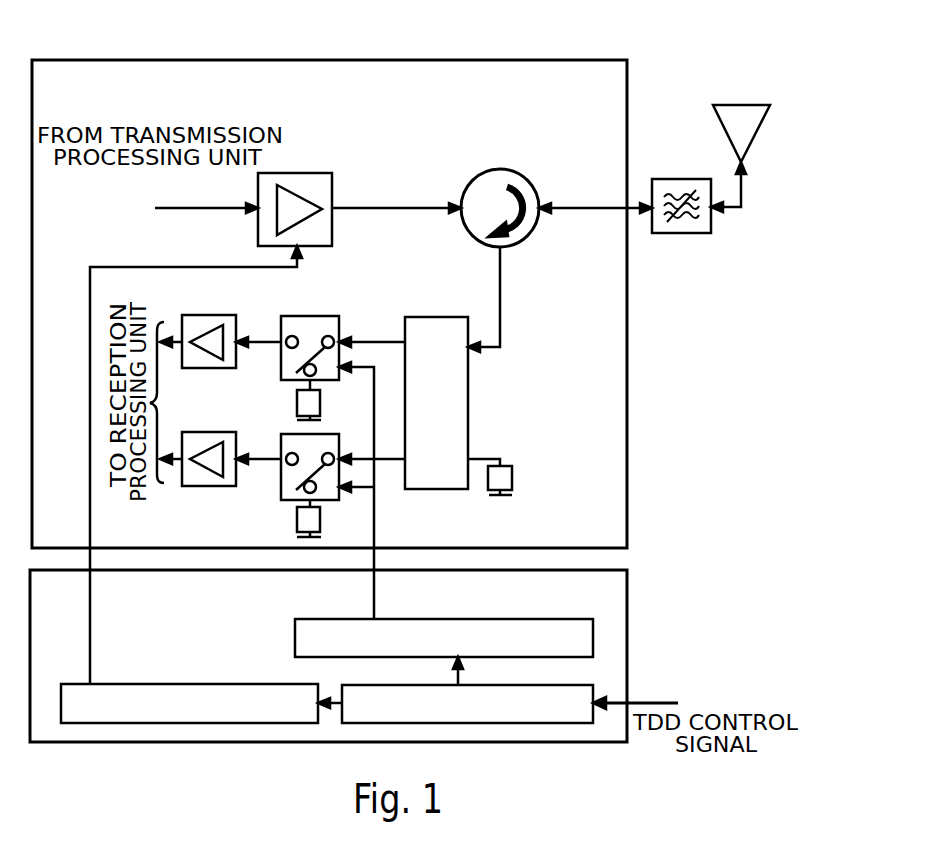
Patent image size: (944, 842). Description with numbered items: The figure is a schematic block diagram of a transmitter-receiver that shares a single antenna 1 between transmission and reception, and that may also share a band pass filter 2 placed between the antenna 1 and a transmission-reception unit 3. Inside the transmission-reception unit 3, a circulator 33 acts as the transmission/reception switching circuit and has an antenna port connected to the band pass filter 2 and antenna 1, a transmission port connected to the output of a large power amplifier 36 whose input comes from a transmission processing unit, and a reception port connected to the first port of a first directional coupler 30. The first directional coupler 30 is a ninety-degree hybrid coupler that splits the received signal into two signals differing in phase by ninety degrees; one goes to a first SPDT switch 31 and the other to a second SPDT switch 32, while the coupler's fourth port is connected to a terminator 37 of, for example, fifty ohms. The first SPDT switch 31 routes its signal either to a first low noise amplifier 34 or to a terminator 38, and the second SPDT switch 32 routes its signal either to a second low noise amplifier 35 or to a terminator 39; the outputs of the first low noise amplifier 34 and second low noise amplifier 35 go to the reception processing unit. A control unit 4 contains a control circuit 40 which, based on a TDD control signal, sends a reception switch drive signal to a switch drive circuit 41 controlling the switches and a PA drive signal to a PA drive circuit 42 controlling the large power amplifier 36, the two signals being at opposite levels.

The antenna 1 is at (736, 105).
The band pass filter 2 is at (673, 233).
The transmission-reception unit 3 is at (273, 60).
The control unit 4 is at (212, 742).
The first directional coupler 30 is at (420, 317).
The first SPDT switch 31 is at (323, 316).
The second SPDT switch 32 is at (281, 438).
The circulator 33 is at (500, 171).
The first low noise amplifier 34 is at (200, 315).
The second low noise amplifier 35 is at (215, 433).
The large power amplifier 36 is at (332, 173).
The terminator 37 is at (512, 478).
The terminator 38 is at (320, 405).
The terminator 39 is at (320, 520).
The control circuit 40 is at (487, 723).
The switch drive circuit 41 is at (295, 635).
The PA drive circuit 42 is at (157, 684).